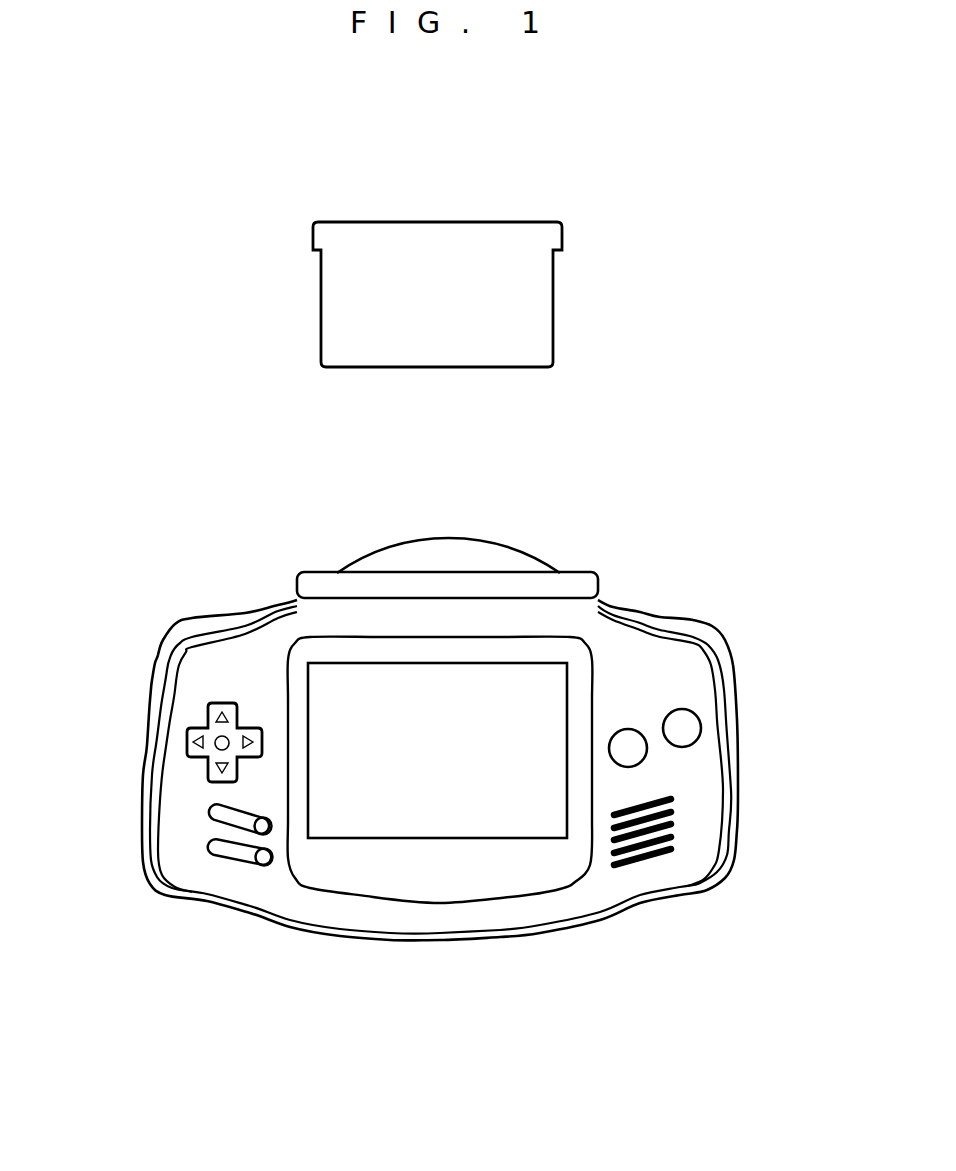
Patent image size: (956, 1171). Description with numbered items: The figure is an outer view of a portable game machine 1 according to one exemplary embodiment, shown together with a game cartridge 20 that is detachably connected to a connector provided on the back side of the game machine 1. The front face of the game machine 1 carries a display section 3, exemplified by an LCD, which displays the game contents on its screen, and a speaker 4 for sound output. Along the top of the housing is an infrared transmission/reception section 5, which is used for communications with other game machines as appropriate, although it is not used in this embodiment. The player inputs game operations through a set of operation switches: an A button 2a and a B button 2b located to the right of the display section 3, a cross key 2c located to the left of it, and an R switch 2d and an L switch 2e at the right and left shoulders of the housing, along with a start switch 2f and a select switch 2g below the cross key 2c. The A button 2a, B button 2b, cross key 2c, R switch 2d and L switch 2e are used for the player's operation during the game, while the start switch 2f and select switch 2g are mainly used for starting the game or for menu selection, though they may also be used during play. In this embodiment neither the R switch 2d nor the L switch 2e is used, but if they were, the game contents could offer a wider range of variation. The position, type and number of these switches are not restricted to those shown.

The game machine 1 is at (740, 788).
The A button 2a is at (695, 718).
The B button 2b is at (637, 735).
The cross key 2c is at (187, 730).
The R switch 2d is at (662, 618).
The L switch 2e is at (222, 620).
The start switch 2f is at (255, 835).
The select switch 2g is at (260, 868).
The display section 3 is at (457, 832).
The speaker 4 is at (647, 857).
The infrared transmission/reception section 5 is at (505, 556).
The game cartridge 20 is at (530, 250).